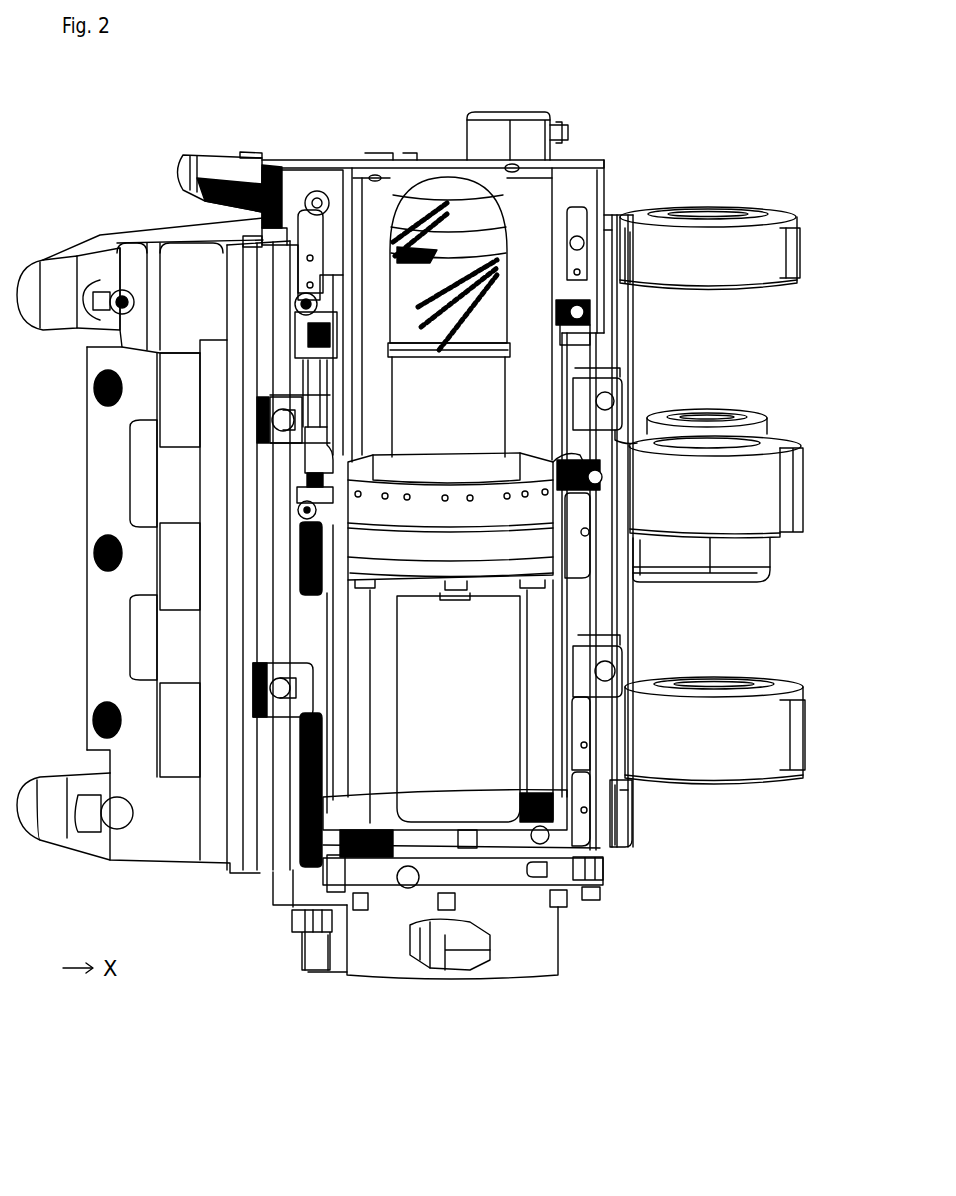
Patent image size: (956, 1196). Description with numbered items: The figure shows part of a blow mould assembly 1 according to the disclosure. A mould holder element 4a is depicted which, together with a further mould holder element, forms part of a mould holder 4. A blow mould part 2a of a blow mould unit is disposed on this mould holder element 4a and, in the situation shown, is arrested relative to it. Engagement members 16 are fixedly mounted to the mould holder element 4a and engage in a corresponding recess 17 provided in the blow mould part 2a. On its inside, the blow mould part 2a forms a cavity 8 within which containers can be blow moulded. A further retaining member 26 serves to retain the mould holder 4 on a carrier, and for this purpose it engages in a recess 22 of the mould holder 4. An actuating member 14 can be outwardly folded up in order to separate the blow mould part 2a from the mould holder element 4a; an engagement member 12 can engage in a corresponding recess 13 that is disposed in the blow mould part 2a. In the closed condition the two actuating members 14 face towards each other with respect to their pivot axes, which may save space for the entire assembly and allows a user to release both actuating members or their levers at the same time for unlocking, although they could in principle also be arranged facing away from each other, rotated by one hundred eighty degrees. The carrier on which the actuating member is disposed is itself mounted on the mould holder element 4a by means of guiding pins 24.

The blow mould assembly 1 is at (238, 937).
The blow mould part 2a is at (537, 376).
The mould holder 4 is at (345, 150).
The mould holder element 4a is at (608, 180).
The cavity 8 is at (470, 419).
The engagement member 12 is at (317, 330).
The recess 13 is at (334, 468).
The actuating member 14 is at (317, 362).
The engagement members 16 is at (585, 300).
The recess 17 is at (560, 290).
The recess 22 is at (582, 640).
The guiding pins 24 is at (582, 378).
The retaining member 26 is at (277, 667).